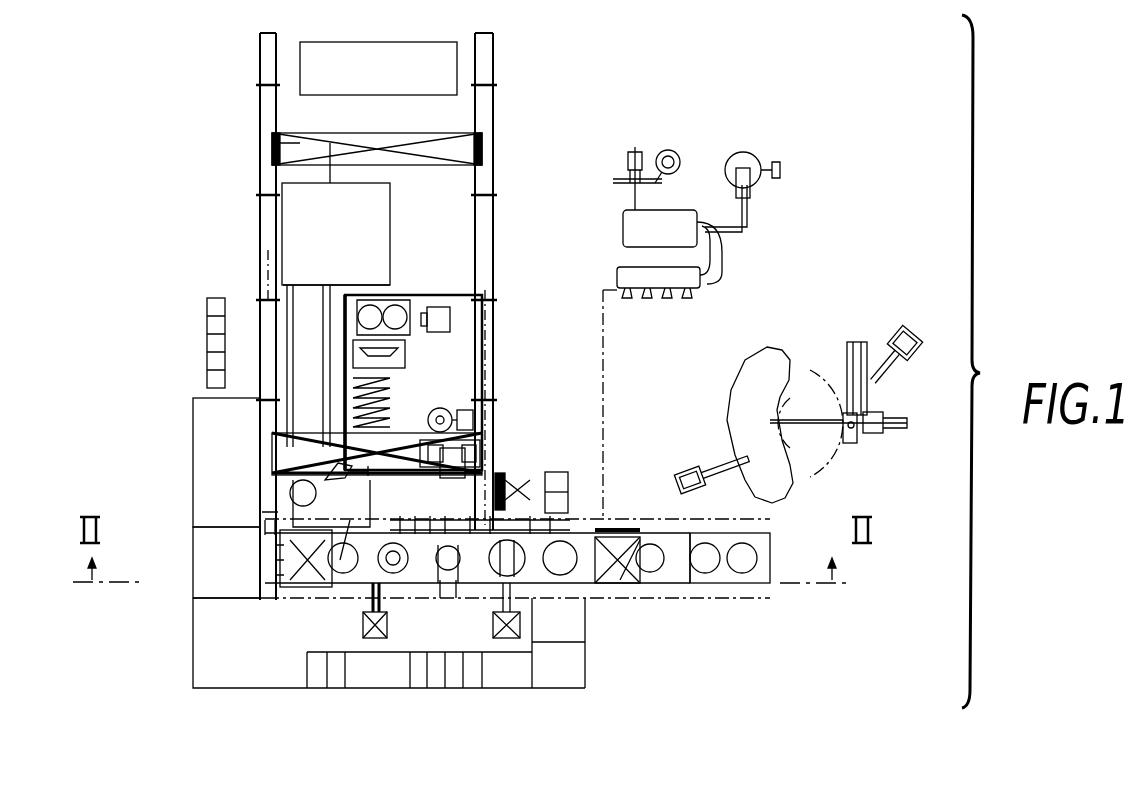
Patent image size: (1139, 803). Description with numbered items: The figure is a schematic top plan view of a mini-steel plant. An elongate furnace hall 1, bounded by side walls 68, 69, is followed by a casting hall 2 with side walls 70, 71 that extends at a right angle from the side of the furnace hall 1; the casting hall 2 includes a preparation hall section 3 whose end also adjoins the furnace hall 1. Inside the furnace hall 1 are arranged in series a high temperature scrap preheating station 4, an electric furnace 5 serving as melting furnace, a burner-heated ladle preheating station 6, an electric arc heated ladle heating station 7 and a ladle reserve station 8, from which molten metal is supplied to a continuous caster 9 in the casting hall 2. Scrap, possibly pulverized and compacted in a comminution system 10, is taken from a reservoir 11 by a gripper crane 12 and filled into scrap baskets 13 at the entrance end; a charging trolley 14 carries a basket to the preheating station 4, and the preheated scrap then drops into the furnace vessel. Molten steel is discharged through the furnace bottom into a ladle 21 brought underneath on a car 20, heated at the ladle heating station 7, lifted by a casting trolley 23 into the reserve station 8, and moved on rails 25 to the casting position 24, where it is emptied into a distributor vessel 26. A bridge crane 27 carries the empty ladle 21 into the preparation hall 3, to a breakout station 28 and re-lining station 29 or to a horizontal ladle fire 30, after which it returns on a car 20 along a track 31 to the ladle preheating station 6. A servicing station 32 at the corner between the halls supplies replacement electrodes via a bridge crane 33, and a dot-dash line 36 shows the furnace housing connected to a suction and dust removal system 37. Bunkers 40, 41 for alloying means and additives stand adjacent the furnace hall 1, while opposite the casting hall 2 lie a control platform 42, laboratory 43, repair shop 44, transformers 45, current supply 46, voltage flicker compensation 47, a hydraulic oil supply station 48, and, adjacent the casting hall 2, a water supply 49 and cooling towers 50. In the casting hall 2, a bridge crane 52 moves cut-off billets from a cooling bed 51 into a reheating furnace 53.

The furnace hall 1 is at (658, 602).
The casting hall 2 is at (498, 182).
The preparation hall section 3 is at (466, 350).
The high temperature scrap preheating station 4 is at (600, 585).
The electric furnace 5 is at (522, 585).
The burner-heated ladle preheating station 6 is at (440, 585).
The electric arc heated ladle heating station 7 is at (345, 583).
The ladle reserve station 8 is at (292, 590).
The continuous caster 9 is at (288, 352).
The comminution system 10 is at (845, 355).
The reservoir 11 is at (788, 478).
The gripper crane 12 is at (690, 465).
The scrap baskets 13 is at (742, 563).
The charging trolley 14 is at (613, 536).
The car 20 is at (456, 460).
The ladle 21 is at (275, 575).
The casting trolley 23 is at (272, 540).
The casting position 24 is at (290, 490).
The rails 25 is at (268, 503).
The distributor vessel 26 is at (404, 352).
The bridge crane 27 is at (405, 456).
The breakout station 28 is at (447, 305).
The re-lining station 29 is at (396, 305).
The horizontal ladle fire 30 is at (463, 446).
The track 31 is at (438, 428).
The servicing station 32 is at (505, 477).
The bridge crane 33 is at (525, 475).
The dot-dash line 36 is at (604, 363).
The suction and dust removal system 37 is at (712, 257).
The bunker 40 is at (576, 520).
The bunker 41 is at (470, 585).
The control platform 42 is at (575, 635).
The laboratory 43 is at (578, 678).
The repair shop 44 is at (418, 652).
The transformers 45 is at (375, 638).
The current supply 46 is at (455, 687).
The voltage flicker compensation 47 is at (200, 658).
The hydraulic oil supply station 48 is at (200, 565).
The water supply 49 is at (203, 412).
The cooling towers 50 is at (198, 330).
The cooling bed 51 is at (384, 220).
The bridge crane 52 is at (466, 133).
The reheating furnace 53 is at (448, 62).
The side wall 68 is at (648, 600).
The side wall 69 is at (618, 495).
The side wall 70 is at (488, 270).
The side wall 71 is at (262, 273).